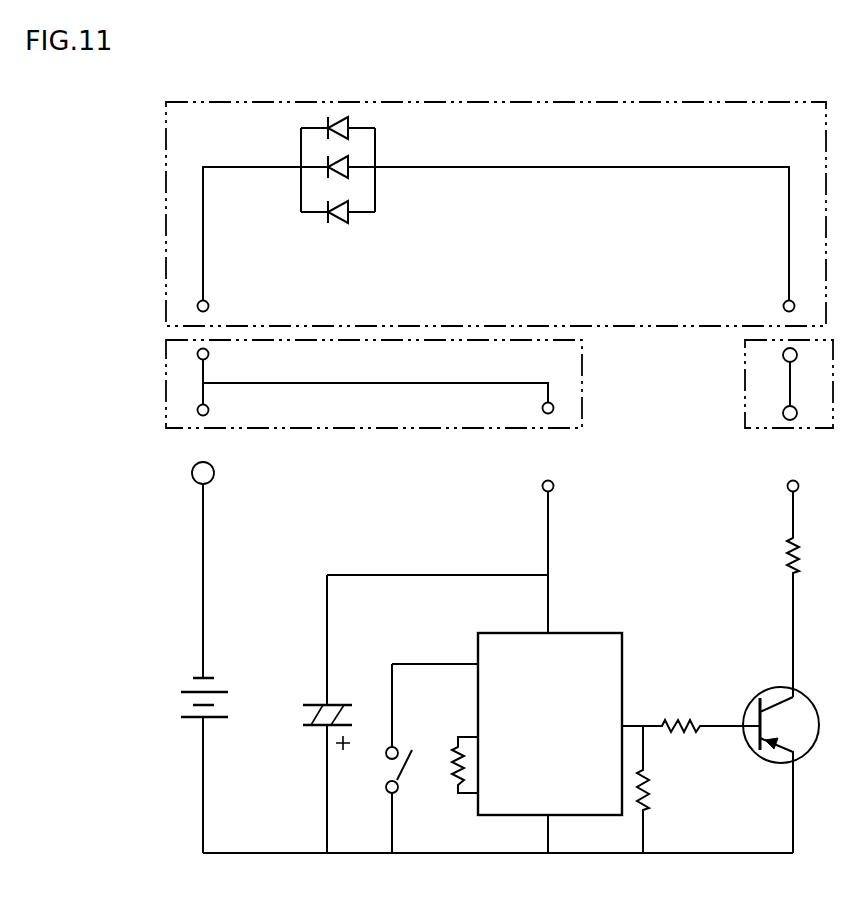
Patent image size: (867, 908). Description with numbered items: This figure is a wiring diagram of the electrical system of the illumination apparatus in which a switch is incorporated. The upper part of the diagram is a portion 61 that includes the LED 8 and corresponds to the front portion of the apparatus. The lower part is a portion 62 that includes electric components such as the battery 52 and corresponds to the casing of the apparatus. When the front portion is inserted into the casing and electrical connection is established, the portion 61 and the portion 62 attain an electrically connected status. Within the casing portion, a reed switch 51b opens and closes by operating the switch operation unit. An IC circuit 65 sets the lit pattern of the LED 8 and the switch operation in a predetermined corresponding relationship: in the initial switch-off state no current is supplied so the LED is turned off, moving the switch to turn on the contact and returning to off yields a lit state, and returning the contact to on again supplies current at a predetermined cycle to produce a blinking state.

The LED 8 is at (350, 122).
The portion 61 is at (152, 102).
The portion 62 is at (152, 465).
The battery 52 is at (217, 720).
The reed switch 51b is at (384, 772).
The IC circuit 65 is at (589, 633).